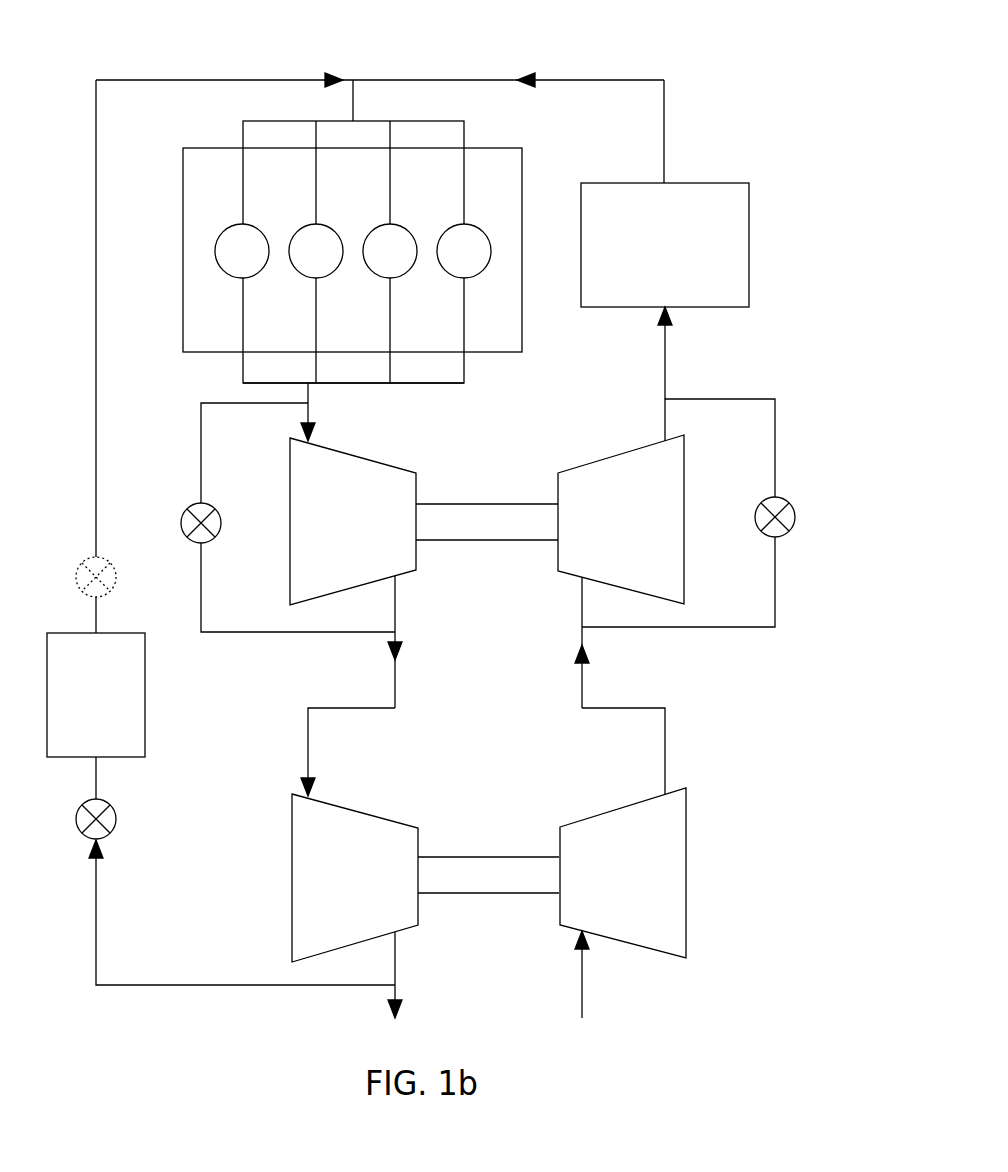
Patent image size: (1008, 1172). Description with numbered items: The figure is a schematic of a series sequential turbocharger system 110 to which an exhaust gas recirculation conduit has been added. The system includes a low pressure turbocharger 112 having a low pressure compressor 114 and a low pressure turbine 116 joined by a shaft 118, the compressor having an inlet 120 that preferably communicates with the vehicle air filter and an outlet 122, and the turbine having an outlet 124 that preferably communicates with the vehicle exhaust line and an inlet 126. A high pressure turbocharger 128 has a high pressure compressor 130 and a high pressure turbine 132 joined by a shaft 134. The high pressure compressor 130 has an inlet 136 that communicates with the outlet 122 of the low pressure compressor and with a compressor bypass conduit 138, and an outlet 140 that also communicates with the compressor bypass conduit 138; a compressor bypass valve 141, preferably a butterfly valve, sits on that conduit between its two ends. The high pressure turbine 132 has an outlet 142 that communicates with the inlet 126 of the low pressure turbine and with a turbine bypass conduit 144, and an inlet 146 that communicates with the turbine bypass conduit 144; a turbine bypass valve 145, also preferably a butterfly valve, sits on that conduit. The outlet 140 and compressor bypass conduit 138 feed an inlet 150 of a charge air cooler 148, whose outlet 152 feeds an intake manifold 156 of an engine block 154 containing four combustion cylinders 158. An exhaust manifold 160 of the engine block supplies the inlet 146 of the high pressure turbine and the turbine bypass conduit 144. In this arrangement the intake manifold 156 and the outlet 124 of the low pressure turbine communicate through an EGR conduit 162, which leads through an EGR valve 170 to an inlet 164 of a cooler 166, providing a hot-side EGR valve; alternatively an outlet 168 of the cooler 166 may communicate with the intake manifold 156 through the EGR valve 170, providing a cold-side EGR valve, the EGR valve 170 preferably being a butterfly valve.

The series sequential turbocharger system 110 is at (732, 92).
The low pressure turbocharger 112 is at (491, 860).
The low pressure compressor 114 is at (688, 820).
The low pressure turbine 116 is at (292, 838).
The shaft 118 is at (518, 893).
The inlet 120 is at (585, 932).
The outlet 122 is at (668, 792).
The outlet 124 is at (398, 935).
The inlet 126 is at (300, 793).
The high pressure turbocharger 128 is at (489, 488).
The high pressure compressor 130 is at (685, 560).
The high pressure turbine 132 is at (290, 560).
The shaft 134 is at (515, 503).
The inlet 136 is at (582, 587).
The compressor bypass conduit 138 is at (777, 573).
The outlet 140 is at (665, 435).
The compressor bypass valve 141 is at (795, 510).
The outlet 142 is at (392, 580).
The turbine bypass conduit 144 is at (252, 632).
The turbine bypass valve 145 is at (192, 505).
The inlet 146 is at (312, 438).
The charge air cooler 148 is at (750, 243).
The inlet 150 is at (668, 310).
The outlet 152 is at (664, 180).
The engine block 154 is at (483, 148).
The intake manifold 156 is at (263, 121).
The combustion cylinders 158 is at (225, 263).
The exhaust manifold 160 is at (424, 383).
The exhaust gas recirculation (EGR) conduit 162 is at (245, 985).
The inlet 164 is at (100, 760).
The cooler 166 is at (146, 700).
The outlet 168 is at (98, 632).
The EGR valve 170 is at (105, 836).